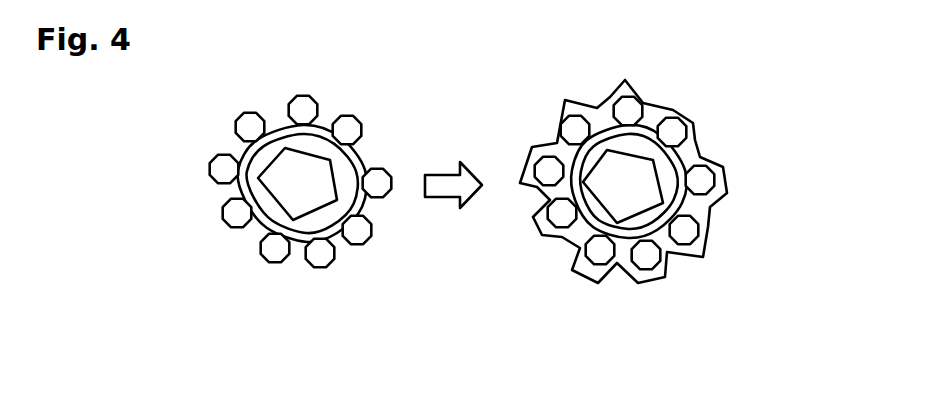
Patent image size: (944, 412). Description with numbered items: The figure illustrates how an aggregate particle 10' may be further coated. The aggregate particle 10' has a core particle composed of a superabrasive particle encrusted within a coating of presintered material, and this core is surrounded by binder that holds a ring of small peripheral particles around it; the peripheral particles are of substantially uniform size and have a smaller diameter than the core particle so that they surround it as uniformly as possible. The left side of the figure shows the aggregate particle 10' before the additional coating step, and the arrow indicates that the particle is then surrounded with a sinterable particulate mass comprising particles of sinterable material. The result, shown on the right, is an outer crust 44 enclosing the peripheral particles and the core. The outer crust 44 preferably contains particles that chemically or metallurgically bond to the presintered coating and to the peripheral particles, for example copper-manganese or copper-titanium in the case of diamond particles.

The aggregate particle 10' is at (330, 176).
The outer crust 44 is at (663, 110).